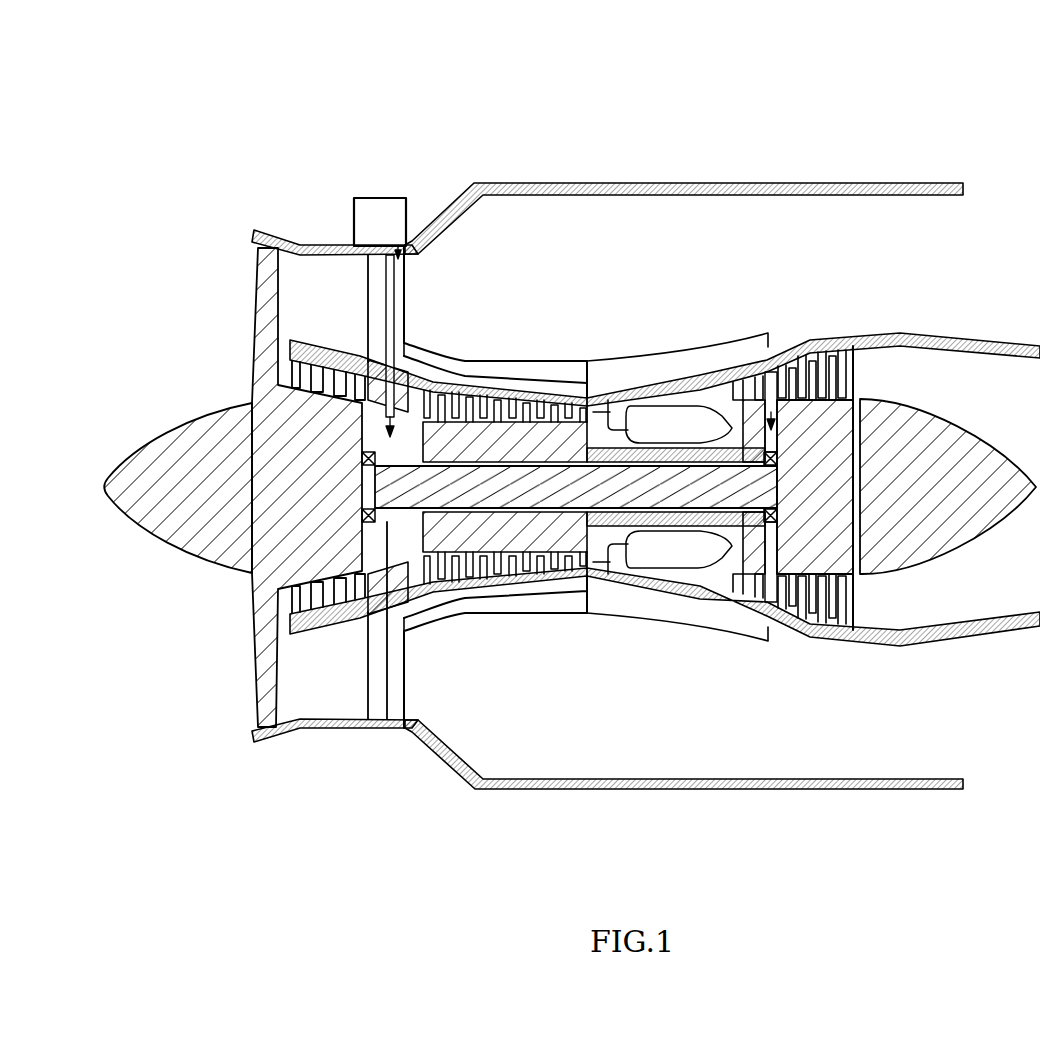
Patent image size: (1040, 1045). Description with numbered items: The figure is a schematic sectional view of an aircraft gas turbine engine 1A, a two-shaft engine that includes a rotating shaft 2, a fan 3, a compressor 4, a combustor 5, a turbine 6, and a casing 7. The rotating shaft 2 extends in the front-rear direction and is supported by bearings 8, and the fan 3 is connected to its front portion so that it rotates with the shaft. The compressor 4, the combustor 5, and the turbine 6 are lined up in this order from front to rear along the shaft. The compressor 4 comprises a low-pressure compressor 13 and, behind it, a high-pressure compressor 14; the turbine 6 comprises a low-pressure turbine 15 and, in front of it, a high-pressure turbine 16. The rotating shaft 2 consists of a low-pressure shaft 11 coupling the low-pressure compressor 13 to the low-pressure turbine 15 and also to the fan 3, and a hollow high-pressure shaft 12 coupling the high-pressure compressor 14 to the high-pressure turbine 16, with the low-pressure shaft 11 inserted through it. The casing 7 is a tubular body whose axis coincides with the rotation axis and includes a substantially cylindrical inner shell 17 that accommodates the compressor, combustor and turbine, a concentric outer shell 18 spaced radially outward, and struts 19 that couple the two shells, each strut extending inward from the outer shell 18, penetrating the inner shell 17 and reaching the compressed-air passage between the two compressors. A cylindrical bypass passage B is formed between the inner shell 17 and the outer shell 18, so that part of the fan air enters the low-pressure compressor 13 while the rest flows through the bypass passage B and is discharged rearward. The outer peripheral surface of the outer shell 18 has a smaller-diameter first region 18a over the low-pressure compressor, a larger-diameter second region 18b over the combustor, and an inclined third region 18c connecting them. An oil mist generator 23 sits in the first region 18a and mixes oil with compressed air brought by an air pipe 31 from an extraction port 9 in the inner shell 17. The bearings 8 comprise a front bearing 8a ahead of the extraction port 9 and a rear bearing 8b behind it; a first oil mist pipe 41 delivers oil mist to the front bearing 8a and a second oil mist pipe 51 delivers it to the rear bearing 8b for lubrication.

The aircraft gas turbine engine 1A is at (980, 101).
The rotating shaft 2 is at (343, 815).
The fan 3 is at (253, 317).
The compressor 4 is at (480, 908).
The combustor 5 is at (650, 557).
The turbine 6 is at (725, 858).
The casing 7 is at (700, 184).
The bearings 8 is at (275, 578).
The front bearing 8a is at (328, 593).
The rear bearing 8b is at (843, 633).
The extraction port 9 is at (603, 392).
The low-pressure shaft 11 is at (425, 560).
The high-pressure shaft 12 is at (403, 525).
The low-pressure compressor 13 is at (282, 745).
The high-pressure compressor 14 is at (503, 563).
The low-pressure turbine 15 is at (788, 585).
The high-pressure turbine 16 is at (751, 600).
The inner shell 17 is at (880, 334).
The outer shell 18 is at (513, 93).
The first region 18a is at (339, 240).
The second region 18b is at (500, 183).
The third region 18c is at (450, 213).
The struts 19 is at (367, 368).
The oil mist generator 23 is at (386, 198).
The air pipe 31 is at (563, 360).
The first oil mist pipe 41 is at (287, 240).
The second oil mist pipe 51 is at (740, 335).
The bypass passage B is at (532, 275).